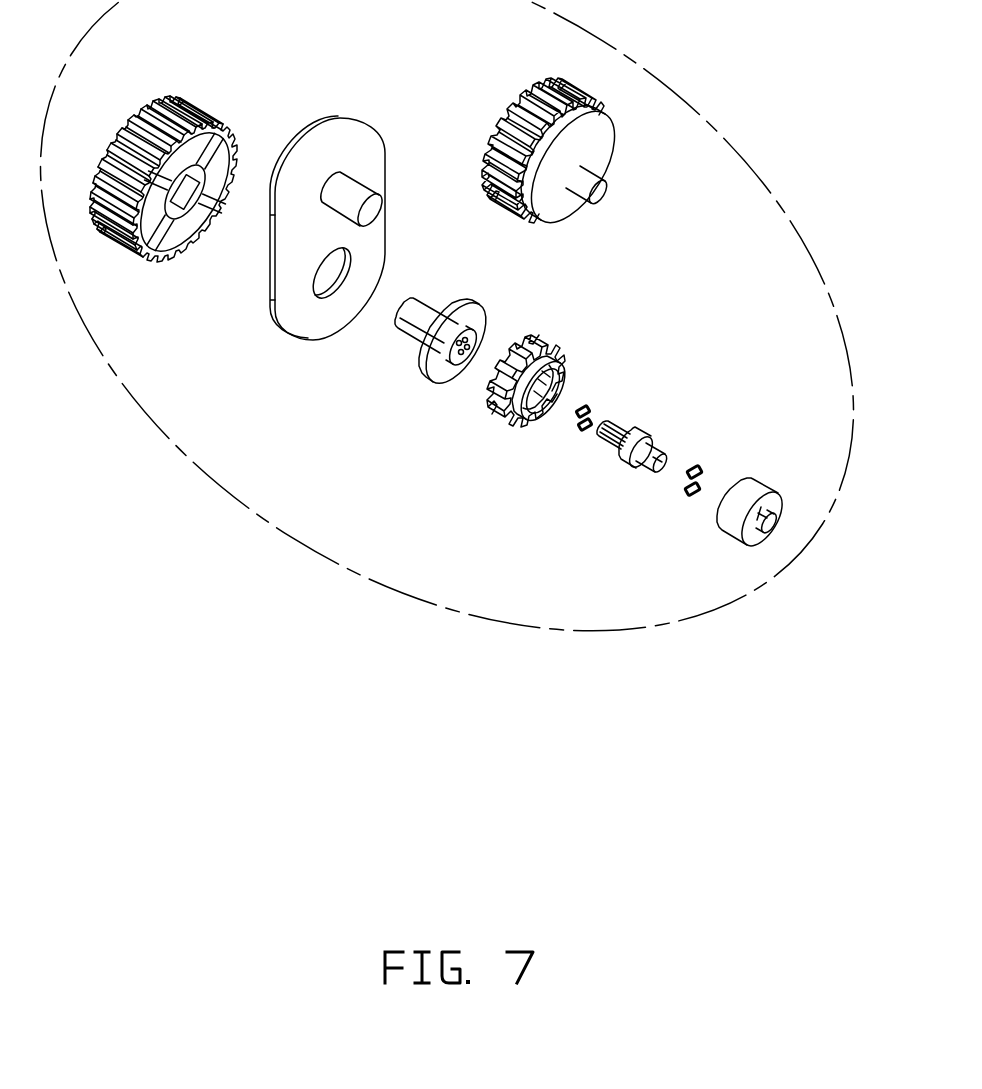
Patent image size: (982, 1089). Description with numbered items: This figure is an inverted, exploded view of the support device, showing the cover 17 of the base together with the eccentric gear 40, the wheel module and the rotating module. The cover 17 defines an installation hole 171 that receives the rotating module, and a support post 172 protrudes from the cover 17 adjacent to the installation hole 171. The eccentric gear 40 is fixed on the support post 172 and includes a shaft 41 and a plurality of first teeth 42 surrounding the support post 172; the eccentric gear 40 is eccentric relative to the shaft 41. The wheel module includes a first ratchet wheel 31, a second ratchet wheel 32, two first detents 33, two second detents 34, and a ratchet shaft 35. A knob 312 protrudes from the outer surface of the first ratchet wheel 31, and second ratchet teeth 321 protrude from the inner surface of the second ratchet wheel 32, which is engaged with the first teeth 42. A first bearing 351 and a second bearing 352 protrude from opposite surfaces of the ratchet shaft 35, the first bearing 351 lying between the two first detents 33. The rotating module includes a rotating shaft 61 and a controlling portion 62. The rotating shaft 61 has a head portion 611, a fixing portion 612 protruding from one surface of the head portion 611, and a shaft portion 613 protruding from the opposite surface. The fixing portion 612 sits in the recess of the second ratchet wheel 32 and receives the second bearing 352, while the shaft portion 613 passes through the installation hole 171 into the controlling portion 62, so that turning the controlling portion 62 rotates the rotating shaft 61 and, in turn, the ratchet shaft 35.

The controlling portion 62 is at (187, 100).
The cover 17 is at (372, 223).
The support post 172 is at (367, 207).
The installation hole 171 is at (337, 263).
The eccentric gear 40 is at (619, 129).
The first teeth 42 is at (575, 87).
The shaft 41 is at (580, 180).
The rotating shaft 61 is at (396, 370).
The head portion 611 is at (433, 360).
The fixing portion 612 is at (458, 353).
The shaft portion 613 is at (415, 325).
The second ratchet wheel 32 is at (568, 369).
The second ratchet teeth 321 is at (560, 374).
The second detent 34 is at (580, 427).
The ratchet shaft 35 is at (620, 463).
The second bearing 352 is at (608, 442).
The first bearing 351 is at (655, 467).
The first detent 33 is at (697, 467).
The first ratchet wheel 31 is at (808, 518).
The knob 312 is at (767, 528).